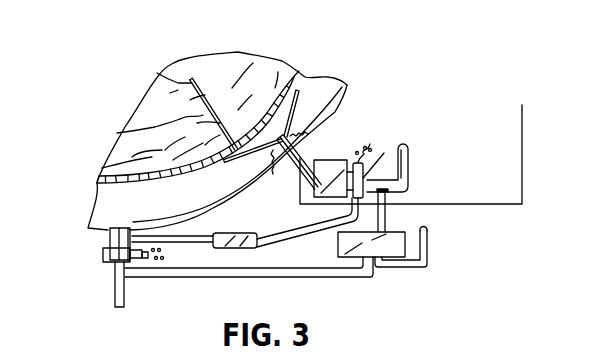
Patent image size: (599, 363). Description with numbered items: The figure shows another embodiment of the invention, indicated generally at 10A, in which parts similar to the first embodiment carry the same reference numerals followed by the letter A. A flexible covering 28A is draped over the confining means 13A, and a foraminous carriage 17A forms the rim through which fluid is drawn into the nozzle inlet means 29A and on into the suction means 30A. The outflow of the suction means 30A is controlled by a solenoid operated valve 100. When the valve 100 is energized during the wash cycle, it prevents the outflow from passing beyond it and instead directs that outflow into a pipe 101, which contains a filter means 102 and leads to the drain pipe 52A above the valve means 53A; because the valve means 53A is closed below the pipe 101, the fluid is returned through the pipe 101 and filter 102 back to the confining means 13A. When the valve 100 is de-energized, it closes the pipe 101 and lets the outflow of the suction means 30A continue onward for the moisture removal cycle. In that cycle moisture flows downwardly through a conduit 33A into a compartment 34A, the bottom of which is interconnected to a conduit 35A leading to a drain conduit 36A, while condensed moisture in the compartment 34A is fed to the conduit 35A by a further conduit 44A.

The another embodiment of the invention 10A is at (384, 55).
The confining means 13A is at (347, 99).
The foraminous carriage 17A is at (115, 184).
The flexible sack 28A is at (161, 73).
The nozzle inlet means 29A is at (313, 76).
The suction means 30A is at (327, 162).
The conduit 33A is at (387, 218).
The compartment 34A is at (393, 250).
The conduit 35A is at (252, 278).
The drain conduit 36A is at (128, 297).
The conduit 44A is at (427, 250).
The drain pipe 52A is at (125, 228).
The valve means 53A is at (100, 255).
The solenoid operated valve 100 is at (383, 153).
The pipe 101 is at (288, 242).
The filter means 102 is at (240, 233).